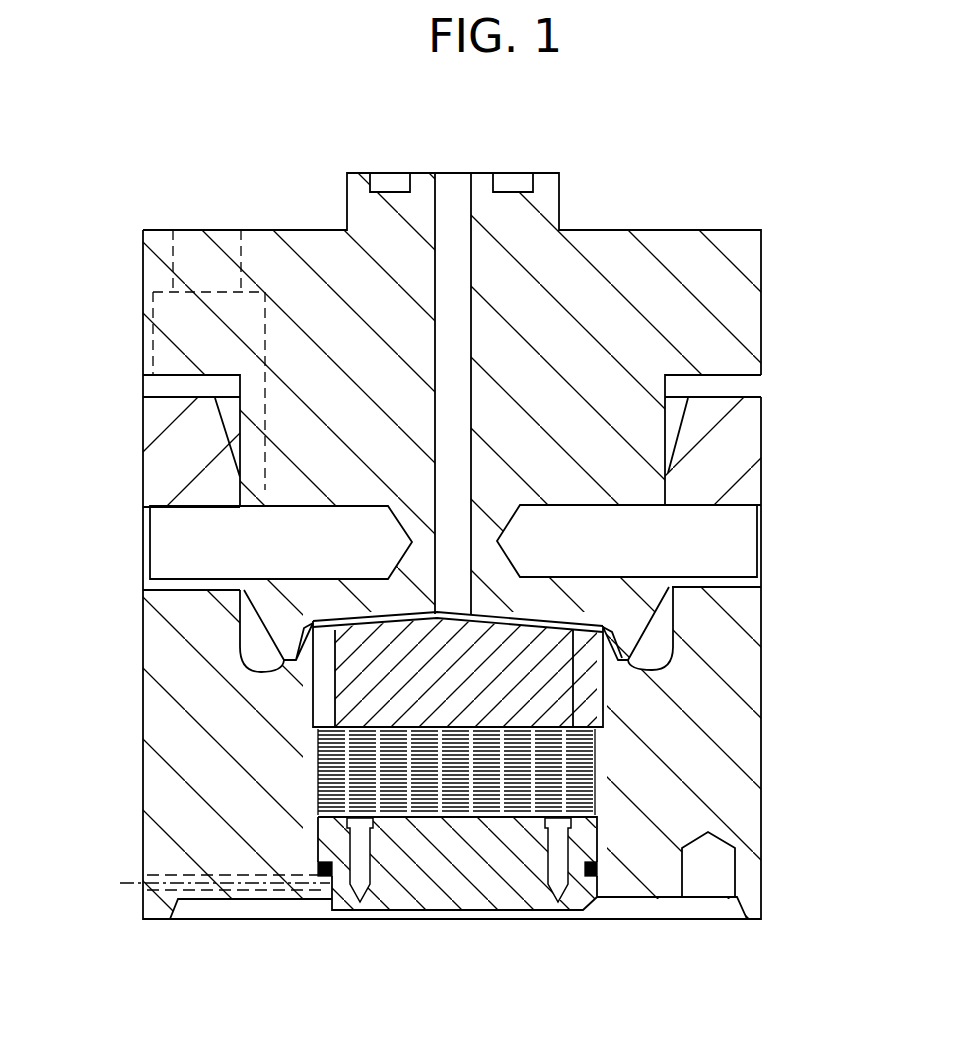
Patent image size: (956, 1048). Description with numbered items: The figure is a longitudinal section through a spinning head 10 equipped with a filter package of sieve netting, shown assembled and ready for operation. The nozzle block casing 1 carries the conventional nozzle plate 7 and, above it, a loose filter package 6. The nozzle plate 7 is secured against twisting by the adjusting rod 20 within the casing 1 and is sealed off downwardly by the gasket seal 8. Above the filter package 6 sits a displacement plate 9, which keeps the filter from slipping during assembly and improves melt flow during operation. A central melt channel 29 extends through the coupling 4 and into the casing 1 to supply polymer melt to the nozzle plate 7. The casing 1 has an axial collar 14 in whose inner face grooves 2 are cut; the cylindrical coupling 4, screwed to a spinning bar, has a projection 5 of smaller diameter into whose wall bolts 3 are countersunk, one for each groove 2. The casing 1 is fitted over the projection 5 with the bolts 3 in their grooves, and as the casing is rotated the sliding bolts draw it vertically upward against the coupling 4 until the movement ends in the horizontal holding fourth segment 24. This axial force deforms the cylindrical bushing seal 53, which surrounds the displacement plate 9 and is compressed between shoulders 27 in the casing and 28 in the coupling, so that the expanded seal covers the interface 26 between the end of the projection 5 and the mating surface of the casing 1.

The nozzle block casing 1 is at (153, 630).
The grooves 2 is at (173, 587).
The bolts 3 is at (168, 522).
The coupling 4 is at (173, 320).
The projection 5 is at (638, 475).
The filter package 6 is at (402, 820).
The nozzle plate 7 is at (500, 890).
The gasket seal 8 is at (592, 877).
The displacement plate 9 is at (368, 678).
The spinning head 10 is at (173, 953).
The axial collar 14 is at (747, 413).
The adjusting rod 20 is at (130, 880).
The fourth segment 24 is at (743, 586).
The interface 26 is at (623, 665).
The shoulder in the casing 27 is at (309, 733).
The shoulder in the coupling 28 is at (313, 623).
The central melt channel 29 is at (457, 218).
The bushing seal 53 is at (310, 726).